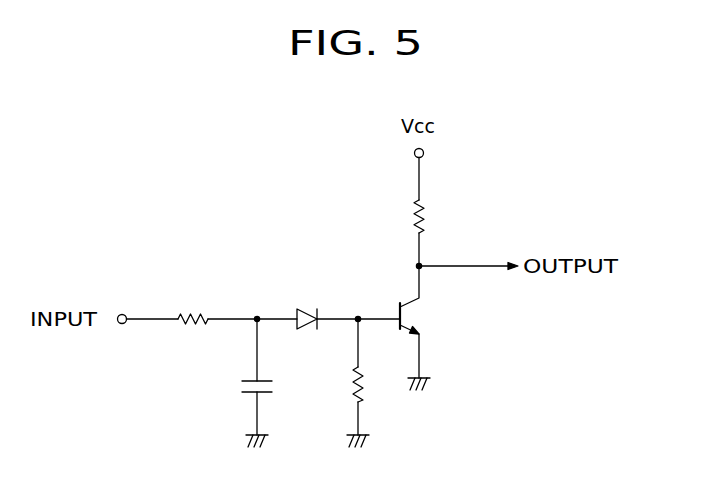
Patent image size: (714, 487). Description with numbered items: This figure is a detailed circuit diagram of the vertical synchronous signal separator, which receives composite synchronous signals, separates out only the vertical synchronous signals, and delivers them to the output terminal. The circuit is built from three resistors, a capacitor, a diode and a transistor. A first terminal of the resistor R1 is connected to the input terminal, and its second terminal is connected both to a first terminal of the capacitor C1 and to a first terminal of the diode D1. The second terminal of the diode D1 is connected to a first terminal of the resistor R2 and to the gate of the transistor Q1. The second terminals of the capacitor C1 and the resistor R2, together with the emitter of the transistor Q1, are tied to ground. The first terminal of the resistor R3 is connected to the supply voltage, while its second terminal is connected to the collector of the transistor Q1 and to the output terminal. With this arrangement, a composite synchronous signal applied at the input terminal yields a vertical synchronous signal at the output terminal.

The resistor R1 is at (193, 303).
The diode D1 is at (306, 304).
The capacitor C1 is at (238, 377).
The resistor R2 is at (340, 377).
The transistor Q1 is at (427, 322).
The resistor R3 is at (434, 212).